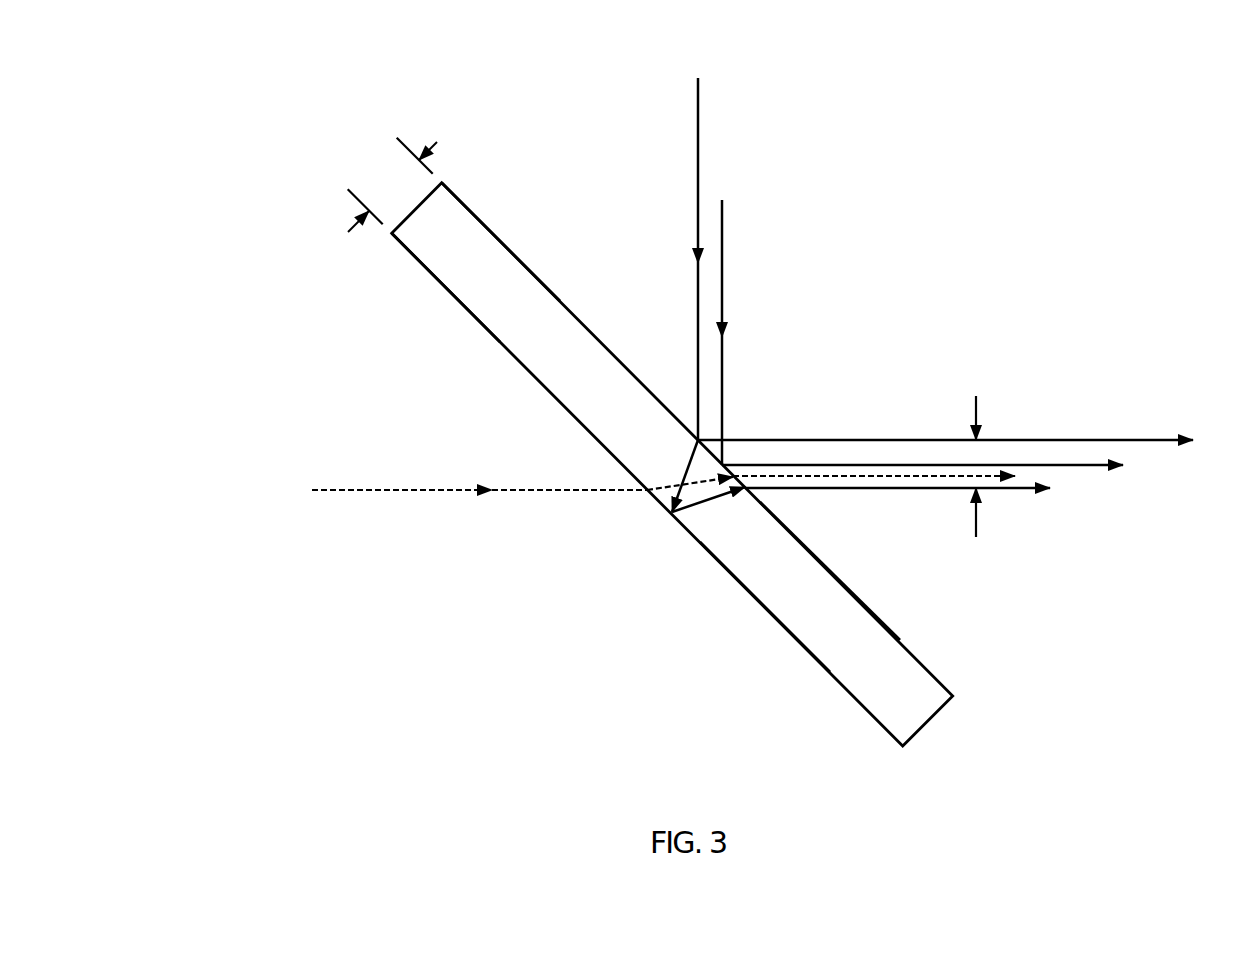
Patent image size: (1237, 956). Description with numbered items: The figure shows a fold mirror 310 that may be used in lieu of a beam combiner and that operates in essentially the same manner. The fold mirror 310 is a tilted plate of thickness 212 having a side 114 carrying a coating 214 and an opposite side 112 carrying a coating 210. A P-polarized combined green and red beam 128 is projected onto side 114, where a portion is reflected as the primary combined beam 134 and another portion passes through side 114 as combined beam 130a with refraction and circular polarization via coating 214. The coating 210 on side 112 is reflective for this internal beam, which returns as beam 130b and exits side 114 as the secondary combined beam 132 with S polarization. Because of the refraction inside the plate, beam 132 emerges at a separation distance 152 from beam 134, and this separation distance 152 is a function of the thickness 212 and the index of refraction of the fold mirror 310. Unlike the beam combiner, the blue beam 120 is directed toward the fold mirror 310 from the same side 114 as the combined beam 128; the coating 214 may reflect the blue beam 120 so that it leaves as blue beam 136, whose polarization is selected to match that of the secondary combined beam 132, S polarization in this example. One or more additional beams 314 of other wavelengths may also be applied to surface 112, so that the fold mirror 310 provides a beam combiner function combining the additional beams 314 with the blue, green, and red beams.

The side 112 is at (835, 682).
The side 114 is at (903, 640).
The blue beam 120 is at (722, 247).
The combined green and red beam 128 is at (698, 138).
The combined beam 130a is at (690, 462).
The beam 130b is at (713, 498).
The combined beam 132 is at (855, 490).
The combined beam 134 is at (783, 438).
The blue beam 136 is at (843, 465).
The separation distance 152 is at (976, 398).
The coating 210 is at (437, 280).
The thickness 212 is at (348, 232).
The coating 214 is at (497, 238).
The fold mirror 310 is at (880, 727).
The additional beams 314 is at (337, 490).